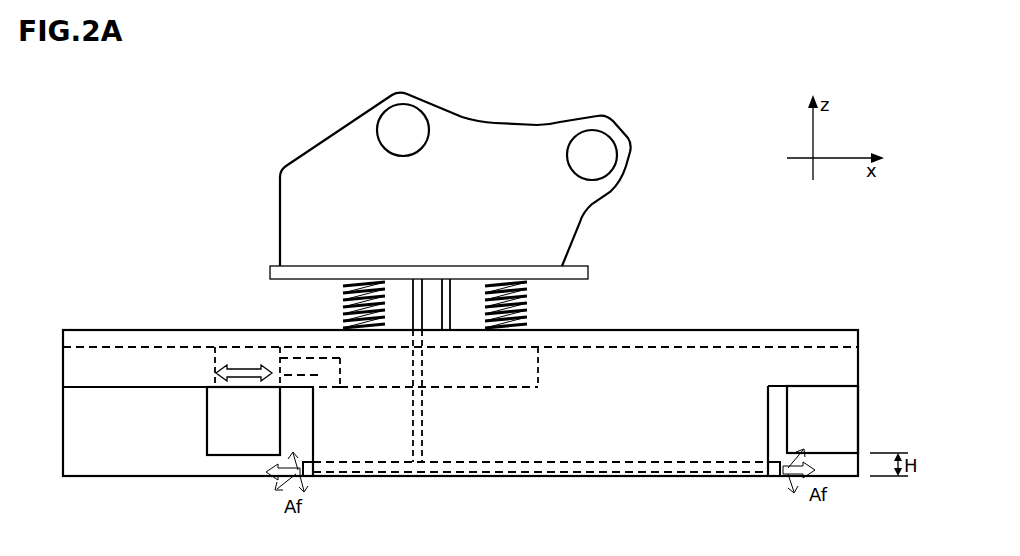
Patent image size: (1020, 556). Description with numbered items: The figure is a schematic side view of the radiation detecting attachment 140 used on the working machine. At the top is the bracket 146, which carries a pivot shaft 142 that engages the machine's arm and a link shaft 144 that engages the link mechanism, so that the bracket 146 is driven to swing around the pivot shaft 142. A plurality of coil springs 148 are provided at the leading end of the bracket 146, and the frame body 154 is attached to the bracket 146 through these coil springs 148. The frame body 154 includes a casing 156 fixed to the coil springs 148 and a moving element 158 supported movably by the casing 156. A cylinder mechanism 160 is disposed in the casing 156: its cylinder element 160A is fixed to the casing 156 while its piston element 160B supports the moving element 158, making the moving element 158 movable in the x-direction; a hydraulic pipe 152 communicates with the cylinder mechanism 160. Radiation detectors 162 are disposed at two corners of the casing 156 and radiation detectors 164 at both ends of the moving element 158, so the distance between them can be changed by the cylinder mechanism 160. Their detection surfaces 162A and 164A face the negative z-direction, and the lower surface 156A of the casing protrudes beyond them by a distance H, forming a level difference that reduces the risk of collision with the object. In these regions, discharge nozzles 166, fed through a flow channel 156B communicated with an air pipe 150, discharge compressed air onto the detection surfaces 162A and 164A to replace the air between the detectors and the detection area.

The radiation detecting attachment 140 is at (655, 122).
The pivot shaft 142 is at (603, 155).
The link shaft 144 is at (405, 128).
The bracket 146 is at (455, 179).
The coil springs 148 is at (345, 290).
The air pipe 150 is at (417, 279).
The hydraulic pipe 152 is at (448, 281).
The frame body 154 is at (720, 318).
The casing 156 is at (670, 453).
The lower surface of the casing 156A is at (564, 483).
The flow channel 156B is at (423, 477).
The moving element 158 is at (247, 358).
The cylinder mechanism 160 is at (468, 387).
The cylinder element 160A is at (439, 367).
The piston element 160B is at (303, 368).
The radiation detectors 162 is at (858, 425).
The detection surface 162A is at (855, 462).
The radiation detectors 164 is at (213, 430).
The detection surface 164A is at (210, 473).
The discharge nozzles 166 is at (315, 477).